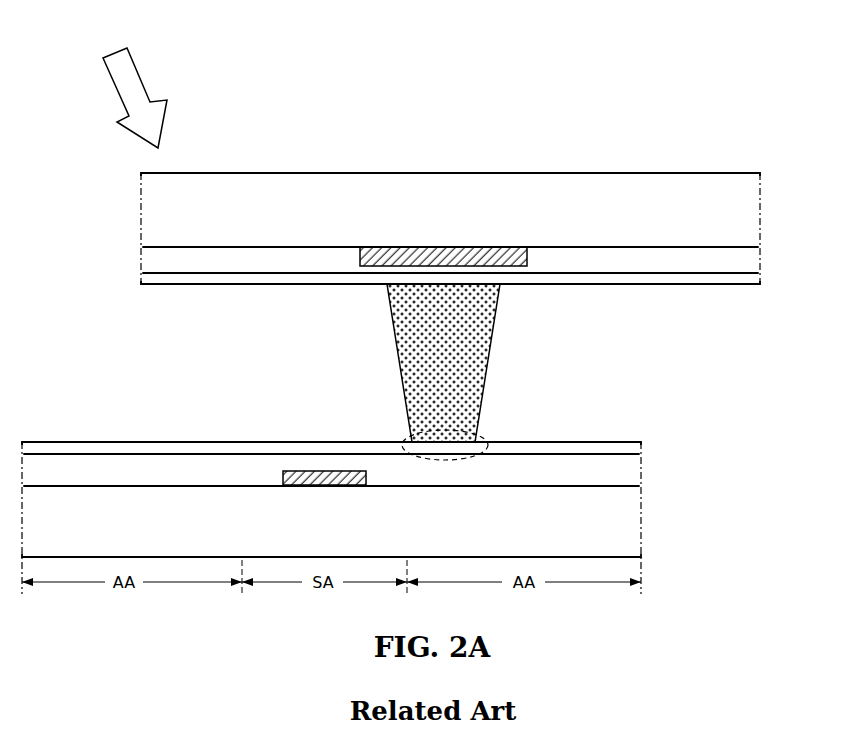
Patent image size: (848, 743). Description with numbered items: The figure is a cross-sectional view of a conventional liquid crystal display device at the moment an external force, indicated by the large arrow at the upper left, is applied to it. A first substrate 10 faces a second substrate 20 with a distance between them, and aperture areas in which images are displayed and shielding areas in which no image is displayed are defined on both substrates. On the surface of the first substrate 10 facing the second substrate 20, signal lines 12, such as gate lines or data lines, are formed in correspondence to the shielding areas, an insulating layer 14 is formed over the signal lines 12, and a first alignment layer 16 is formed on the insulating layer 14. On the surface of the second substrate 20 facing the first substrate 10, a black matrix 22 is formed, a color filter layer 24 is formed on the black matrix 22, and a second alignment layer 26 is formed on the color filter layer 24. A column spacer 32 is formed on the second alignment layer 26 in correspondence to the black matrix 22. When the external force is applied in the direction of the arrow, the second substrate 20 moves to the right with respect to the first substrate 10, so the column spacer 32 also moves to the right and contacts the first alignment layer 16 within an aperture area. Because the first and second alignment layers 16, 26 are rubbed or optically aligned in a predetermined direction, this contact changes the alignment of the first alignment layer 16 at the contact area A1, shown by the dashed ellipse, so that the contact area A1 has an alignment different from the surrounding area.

The first substrate 10 is at (624, 522).
The signal lines 12 is at (317, 472).
The insulating layer 14 is at (624, 472).
The first alignment layer 16 is at (624, 449).
The second substrate 20 is at (742, 207).
The black matrix 22 is at (502, 253).
The color filter layer 24 is at (742, 257).
The second alignment layer 26 is at (742, 278).
The column spacer 32 is at (483, 353).
The contact area A1 is at (458, 430).